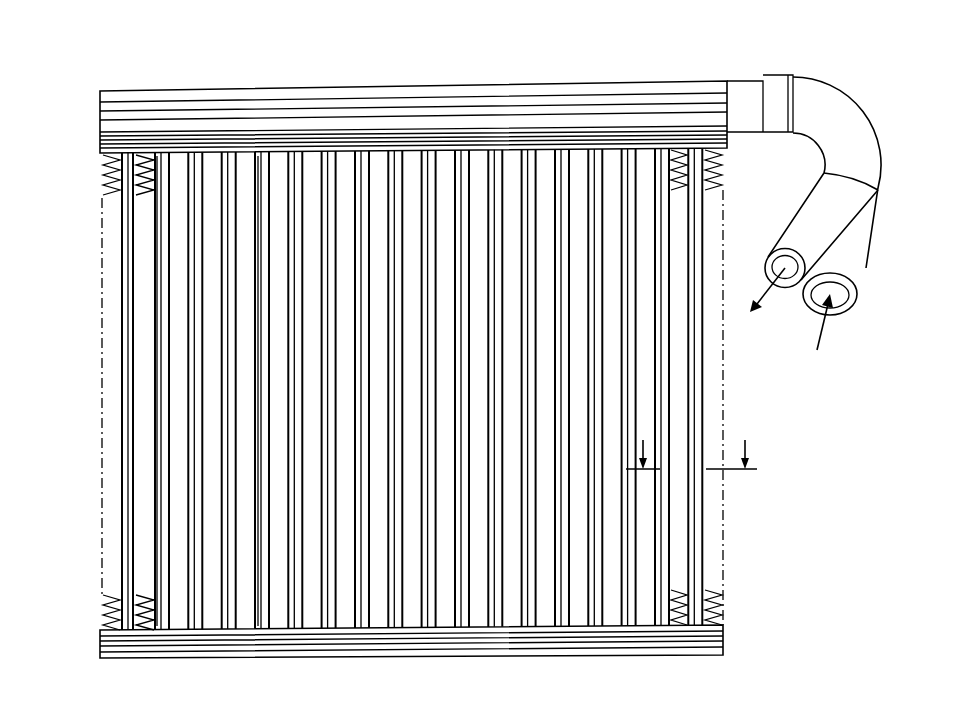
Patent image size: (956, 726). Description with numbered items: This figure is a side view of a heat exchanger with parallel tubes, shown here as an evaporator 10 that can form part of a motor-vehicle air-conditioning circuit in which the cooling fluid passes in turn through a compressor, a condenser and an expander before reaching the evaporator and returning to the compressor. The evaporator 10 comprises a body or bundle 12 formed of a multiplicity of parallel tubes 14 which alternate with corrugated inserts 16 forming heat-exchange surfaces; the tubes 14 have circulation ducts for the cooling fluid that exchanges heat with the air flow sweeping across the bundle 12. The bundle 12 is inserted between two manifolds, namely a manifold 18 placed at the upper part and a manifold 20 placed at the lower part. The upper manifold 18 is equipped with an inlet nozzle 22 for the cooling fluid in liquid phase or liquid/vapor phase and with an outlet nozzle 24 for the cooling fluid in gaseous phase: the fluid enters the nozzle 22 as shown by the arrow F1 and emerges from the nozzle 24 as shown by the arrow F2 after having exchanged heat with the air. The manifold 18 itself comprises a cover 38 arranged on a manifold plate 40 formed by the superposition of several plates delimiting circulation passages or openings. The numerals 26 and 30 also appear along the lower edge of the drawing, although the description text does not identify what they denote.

The evaporator 10 is at (134, 69).
The bundle 12 is at (98, 372).
The parallel tubes 14 is at (193, 493).
The corrugated inserts 16 is at (112, 593).
The manifold 18 is at (345, 80).
The manifold 20 is at (462, 668).
The inlet nozzle 22 is at (858, 265).
The outlet nozzle 24 is at (806, 213).
The second tube row 26 is at (213, 441).
The first tube row 30 is at (166, 439).
The cover 38 is at (250, 87).
The manifold plate 40 is at (100, 143).
The arrow F1 is at (817, 342).
The arrow F2 is at (761, 311).